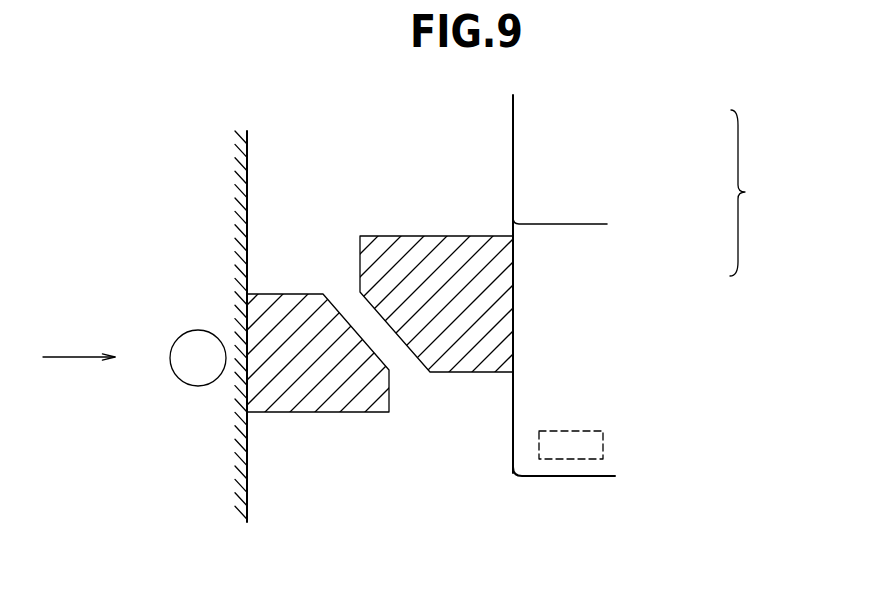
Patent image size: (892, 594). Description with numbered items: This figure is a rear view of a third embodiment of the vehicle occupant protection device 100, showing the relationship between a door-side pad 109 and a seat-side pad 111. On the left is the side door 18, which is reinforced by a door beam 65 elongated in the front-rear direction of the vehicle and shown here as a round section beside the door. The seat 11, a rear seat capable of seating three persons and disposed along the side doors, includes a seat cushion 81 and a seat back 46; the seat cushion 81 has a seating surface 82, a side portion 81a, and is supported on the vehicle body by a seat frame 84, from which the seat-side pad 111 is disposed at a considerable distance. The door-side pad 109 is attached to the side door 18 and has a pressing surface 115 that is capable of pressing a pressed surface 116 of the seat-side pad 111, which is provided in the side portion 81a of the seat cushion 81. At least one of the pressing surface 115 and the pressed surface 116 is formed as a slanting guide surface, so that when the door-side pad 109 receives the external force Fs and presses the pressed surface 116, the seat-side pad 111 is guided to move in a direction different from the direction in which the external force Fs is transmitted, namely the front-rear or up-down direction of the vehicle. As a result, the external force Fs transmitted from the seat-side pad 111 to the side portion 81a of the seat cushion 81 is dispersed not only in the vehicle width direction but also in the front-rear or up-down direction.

The vehicle occupant protection device 100 is at (298, 62).
The side door 18 is at (250, 477).
The door beam 65 is at (193, 330).
The external force Fs is at (79, 341).
The door-side pad 109 is at (268, 293).
The seat-side pad 111 is at (430, 235).
The pressing surface 115 is at (386, 365).
The pressed surface 116 is at (365, 292).
The seat 11 is at (756, 193).
The seat back 46 is at (583, 148).
The seating surface 82 is at (596, 224).
The seat cushion 81 is at (578, 318).
The side portion 81a is at (515, 412).
The seat frame 84 is at (567, 431).